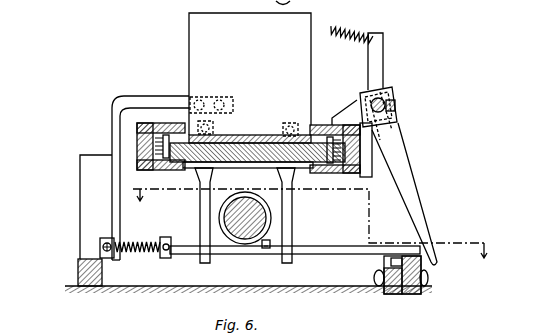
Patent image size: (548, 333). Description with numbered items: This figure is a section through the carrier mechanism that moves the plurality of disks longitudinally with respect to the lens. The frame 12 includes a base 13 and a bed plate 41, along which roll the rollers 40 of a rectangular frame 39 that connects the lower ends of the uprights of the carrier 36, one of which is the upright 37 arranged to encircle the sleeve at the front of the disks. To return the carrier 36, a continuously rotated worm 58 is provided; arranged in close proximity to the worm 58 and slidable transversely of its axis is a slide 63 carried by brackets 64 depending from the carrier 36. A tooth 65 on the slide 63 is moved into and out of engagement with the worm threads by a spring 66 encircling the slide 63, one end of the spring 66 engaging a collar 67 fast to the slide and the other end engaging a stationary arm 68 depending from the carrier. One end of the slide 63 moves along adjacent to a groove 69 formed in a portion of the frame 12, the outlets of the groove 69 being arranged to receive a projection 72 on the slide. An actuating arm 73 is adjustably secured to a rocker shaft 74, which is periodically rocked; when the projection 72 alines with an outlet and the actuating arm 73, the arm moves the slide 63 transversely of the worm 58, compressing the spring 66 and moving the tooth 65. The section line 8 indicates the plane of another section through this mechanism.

The section line 8- 8 is at (307, 219).
The frame 12 is at (248, 300).
The base 13 is at (78, 272).
The carrier 36 is at (347, 54).
The upright 37 is at (234, 74).
The rectangular frame 39 is at (253, 157).
The rollers 40 is at (165, 167).
The bed plate 41 is at (185, 167).
The worm 58 is at (237, 239).
The slide 63 is at (334, 252).
The brackets 64 is at (203, 231).
The tooth 65 is at (270, 245).
The spring 66 is at (138, 247).
The collar 67 is at (165, 259).
The stationary arm 68 is at (113, 209).
The groove 69 is at (384, 263).
The projection 72 is at (421, 261).
The actuating arm 73 is at (426, 199).
The rocker shaft 74 is at (397, 105).